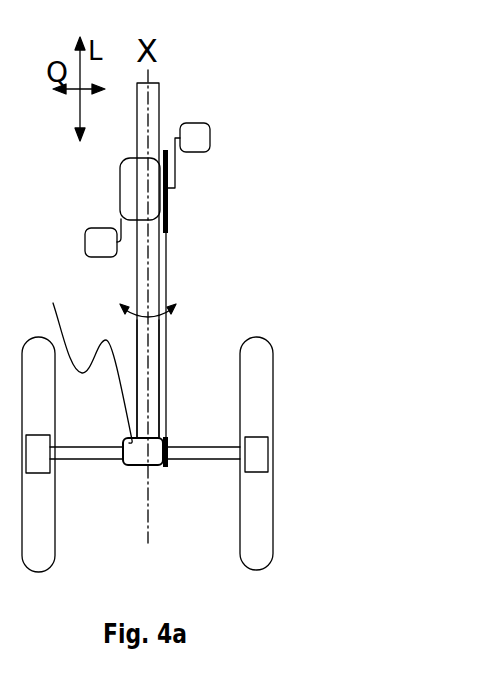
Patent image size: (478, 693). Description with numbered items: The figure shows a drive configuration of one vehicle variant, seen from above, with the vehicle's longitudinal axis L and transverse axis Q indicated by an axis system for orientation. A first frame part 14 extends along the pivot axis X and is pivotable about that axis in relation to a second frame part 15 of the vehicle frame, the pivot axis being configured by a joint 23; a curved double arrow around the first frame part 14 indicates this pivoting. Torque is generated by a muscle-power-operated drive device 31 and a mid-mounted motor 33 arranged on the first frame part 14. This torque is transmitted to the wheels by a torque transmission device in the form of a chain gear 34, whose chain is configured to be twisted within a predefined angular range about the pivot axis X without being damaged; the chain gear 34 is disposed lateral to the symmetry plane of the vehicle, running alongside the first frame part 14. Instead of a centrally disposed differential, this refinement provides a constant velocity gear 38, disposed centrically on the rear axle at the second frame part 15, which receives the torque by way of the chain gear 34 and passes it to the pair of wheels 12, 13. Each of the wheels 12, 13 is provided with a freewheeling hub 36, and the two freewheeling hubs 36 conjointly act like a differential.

The wheel 12 is at (243, 544).
The wheel 13 is at (48, 545).
The first frame part 14 is at (152, 100).
The second frame part 15 is at (182, 462).
The joint 23 is at (152, 362).
The muscle-power-operated drive device 31 is at (203, 184).
The mid-mounted motor 33 is at (137, 187).
The chain gear 34 is at (198, 285).
The freewheeling hub 36 is at (42, 446).
The constant velocity gear 38 is at (87, 357).